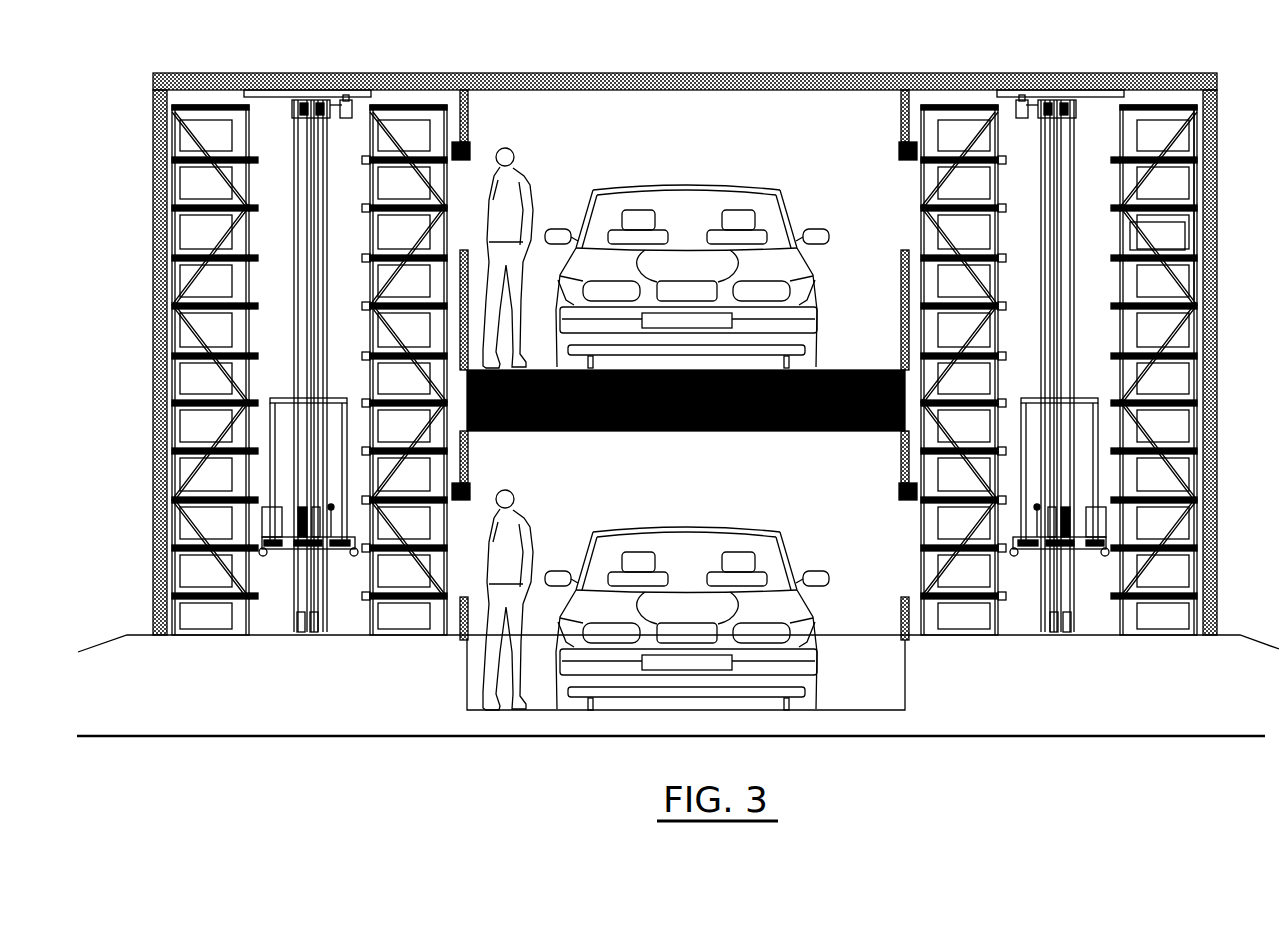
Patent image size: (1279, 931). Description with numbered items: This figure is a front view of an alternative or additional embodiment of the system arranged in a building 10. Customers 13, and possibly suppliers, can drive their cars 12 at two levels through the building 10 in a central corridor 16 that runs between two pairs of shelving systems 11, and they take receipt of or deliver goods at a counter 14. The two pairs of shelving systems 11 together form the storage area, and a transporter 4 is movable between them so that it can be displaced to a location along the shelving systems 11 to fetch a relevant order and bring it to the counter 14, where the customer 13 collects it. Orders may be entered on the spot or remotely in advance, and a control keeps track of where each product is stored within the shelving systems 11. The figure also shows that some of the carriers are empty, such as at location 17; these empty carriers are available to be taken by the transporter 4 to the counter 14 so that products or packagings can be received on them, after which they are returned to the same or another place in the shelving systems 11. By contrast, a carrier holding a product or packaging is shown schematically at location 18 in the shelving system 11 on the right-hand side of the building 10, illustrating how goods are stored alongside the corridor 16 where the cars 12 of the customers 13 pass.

The building 10 is at (792, 75).
The transporter 4 is at (341, 366).
The shelving systems 11 is at (247, 248).
The cars 12 is at (678, 524).
The customers 13 is at (516, 182).
The counter 14 is at (464, 196).
The central corridor 16 is at (684, 142).
The location 17 is at (1183, 242).
The location 18 is at (1194, 200).